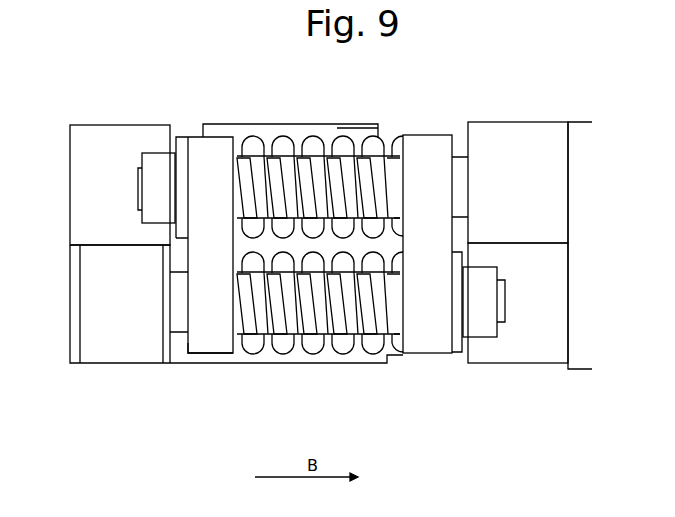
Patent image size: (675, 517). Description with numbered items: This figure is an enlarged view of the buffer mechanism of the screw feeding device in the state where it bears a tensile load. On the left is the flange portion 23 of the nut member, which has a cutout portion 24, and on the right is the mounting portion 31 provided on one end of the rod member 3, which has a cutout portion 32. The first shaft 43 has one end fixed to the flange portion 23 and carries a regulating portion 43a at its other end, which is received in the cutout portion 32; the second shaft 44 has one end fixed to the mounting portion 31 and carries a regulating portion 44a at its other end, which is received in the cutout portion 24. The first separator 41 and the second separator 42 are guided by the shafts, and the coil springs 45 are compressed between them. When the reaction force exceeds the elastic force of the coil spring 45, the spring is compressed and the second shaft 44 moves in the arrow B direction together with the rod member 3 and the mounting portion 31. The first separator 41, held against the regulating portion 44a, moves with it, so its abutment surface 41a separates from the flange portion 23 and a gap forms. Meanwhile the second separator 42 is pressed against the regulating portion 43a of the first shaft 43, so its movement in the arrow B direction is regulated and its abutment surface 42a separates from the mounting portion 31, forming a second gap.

The rod member 3 is at (575, 119).
The flange portion 23 is at (109, 370).
The cutout portion 24 is at (92, 135).
The mounting portion 31 is at (506, 118).
The cutout portion 32 is at (535, 350).
The first separator 41 is at (213, 144).
The abutment surface 41a is at (187, 343).
The second separator 42 is at (427, 138).
The abutment surface 42a is at (460, 145).
The first shaft 43 is at (311, 330).
The regulating portion 43a is at (479, 332).
The second shaft 44 is at (333, 152).
The regulating portion 44a is at (157, 158).
The coil spring 45 is at (282, 145).